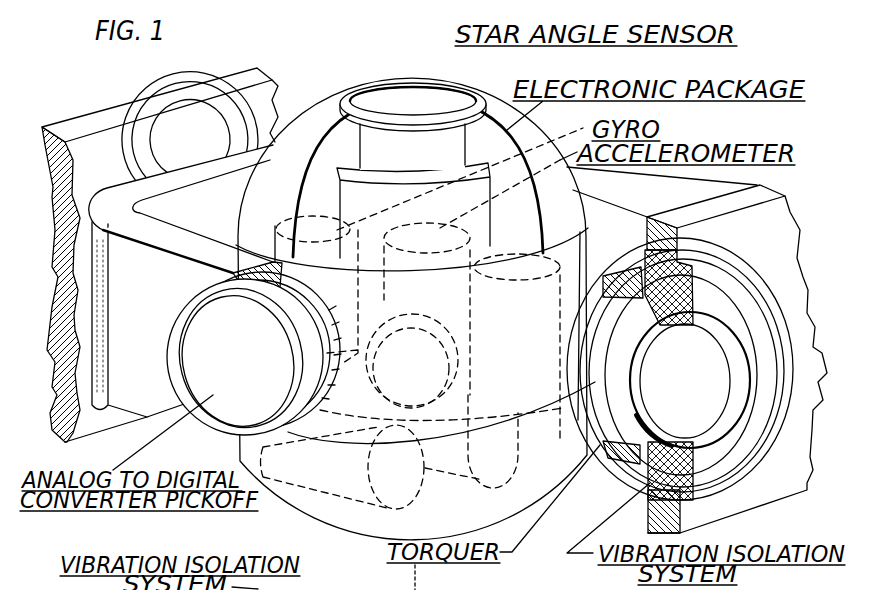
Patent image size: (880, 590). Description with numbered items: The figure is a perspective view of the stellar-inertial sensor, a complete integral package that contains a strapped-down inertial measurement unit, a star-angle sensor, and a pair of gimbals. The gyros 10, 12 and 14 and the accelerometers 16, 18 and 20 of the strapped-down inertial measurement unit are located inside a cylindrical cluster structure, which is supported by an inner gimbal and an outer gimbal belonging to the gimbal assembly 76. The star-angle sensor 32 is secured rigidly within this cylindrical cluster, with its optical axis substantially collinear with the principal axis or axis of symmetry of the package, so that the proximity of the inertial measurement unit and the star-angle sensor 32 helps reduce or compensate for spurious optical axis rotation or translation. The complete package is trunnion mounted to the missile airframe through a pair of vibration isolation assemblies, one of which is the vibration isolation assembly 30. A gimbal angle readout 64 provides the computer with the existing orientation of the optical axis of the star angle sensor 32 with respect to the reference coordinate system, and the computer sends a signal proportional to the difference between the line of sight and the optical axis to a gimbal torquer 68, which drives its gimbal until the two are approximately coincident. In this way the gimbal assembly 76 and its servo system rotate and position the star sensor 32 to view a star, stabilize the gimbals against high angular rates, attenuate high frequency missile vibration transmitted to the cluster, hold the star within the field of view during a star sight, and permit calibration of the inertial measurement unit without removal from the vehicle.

The gimbal assembly 76 is at (201, 87).
The gyro 10 is at (286, 222).
The star-angle sensor 32 is at (548, 47).
The accelerometer 16 is at (432, 230).
The accelerometer 18 is at (378, 391).
The gyro 14 is at (477, 403).
The gyro 12 is at (405, 500).
The accelerometer 20 is at (482, 480).
The gimbal angle readout 64 is at (230, 410).
The gimbal torquer 68 is at (637, 430).
The vibration isolation assembly 30 is at (695, 498).